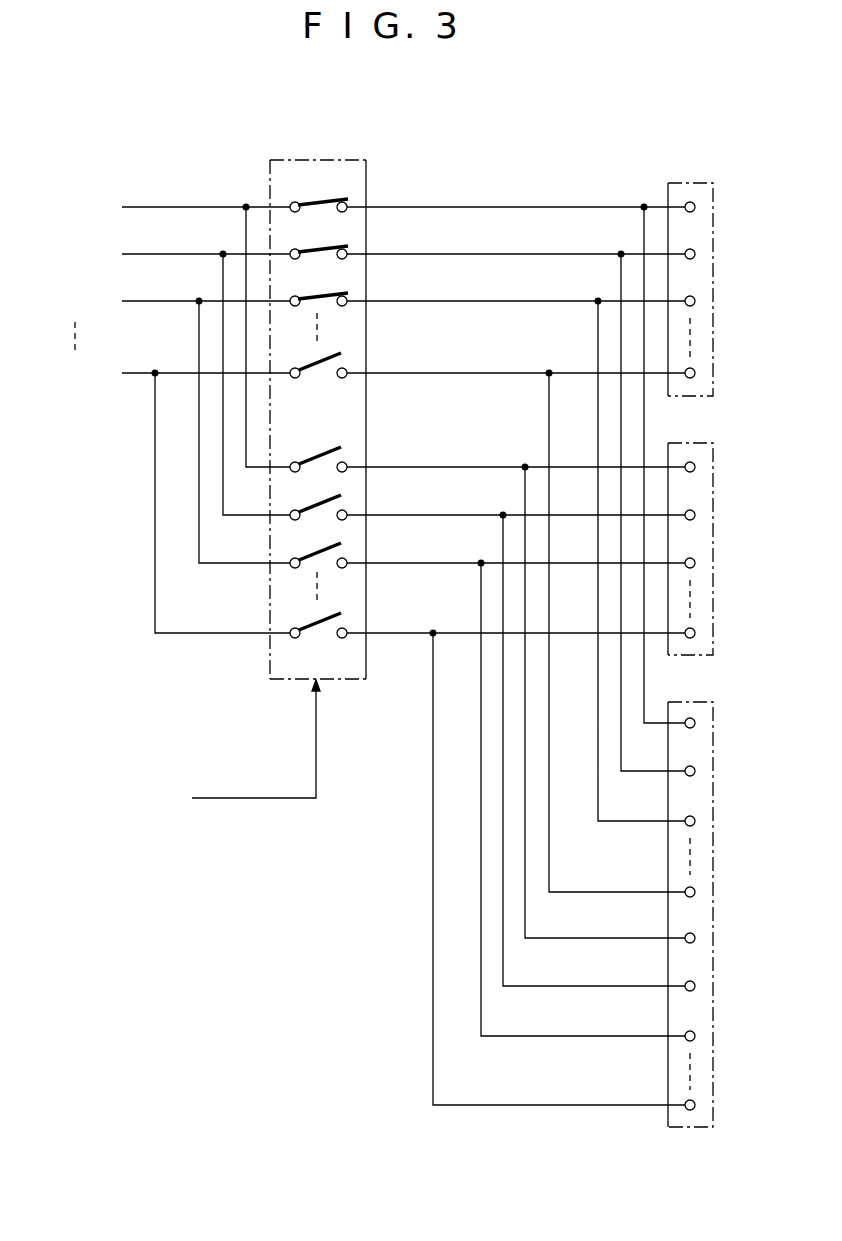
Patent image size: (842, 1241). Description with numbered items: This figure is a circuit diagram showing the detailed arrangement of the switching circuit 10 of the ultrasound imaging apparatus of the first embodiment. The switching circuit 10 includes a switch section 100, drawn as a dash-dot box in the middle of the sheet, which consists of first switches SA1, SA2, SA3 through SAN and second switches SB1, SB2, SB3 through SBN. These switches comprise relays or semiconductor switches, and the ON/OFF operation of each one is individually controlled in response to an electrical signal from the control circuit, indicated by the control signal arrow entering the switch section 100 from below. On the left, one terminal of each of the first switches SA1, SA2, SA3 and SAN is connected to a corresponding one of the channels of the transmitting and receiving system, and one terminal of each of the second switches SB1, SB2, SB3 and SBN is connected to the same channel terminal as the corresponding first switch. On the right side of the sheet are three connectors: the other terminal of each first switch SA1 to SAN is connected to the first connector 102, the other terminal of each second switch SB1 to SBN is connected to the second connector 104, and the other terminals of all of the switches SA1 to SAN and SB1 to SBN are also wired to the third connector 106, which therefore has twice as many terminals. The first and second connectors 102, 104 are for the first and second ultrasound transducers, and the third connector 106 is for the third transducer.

The switching circuit 10 is at (526, 142).
The switch section 100 is at (347, 160).
The first connector 102 is at (683, 183).
The second connector 104 is at (683, 443).
The third connector 106 is at (683, 702).
The first switch SA1 is at (338, 193).
The first switch SA2 is at (338, 240).
The first switch SA3 is at (338, 290).
The first switch SAN is at (340, 348).
The second switch SB1 is at (340, 441).
The second switch SB2 is at (340, 494).
The second switch SB3 is at (340, 542).
The second switch SBN is at (340, 608).